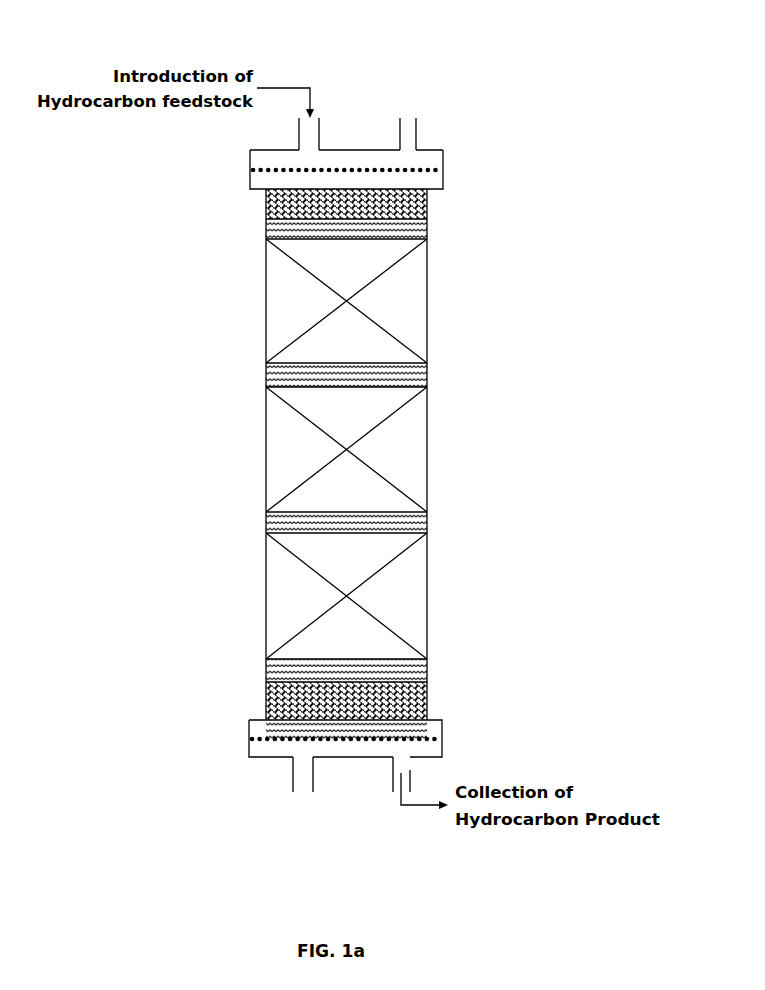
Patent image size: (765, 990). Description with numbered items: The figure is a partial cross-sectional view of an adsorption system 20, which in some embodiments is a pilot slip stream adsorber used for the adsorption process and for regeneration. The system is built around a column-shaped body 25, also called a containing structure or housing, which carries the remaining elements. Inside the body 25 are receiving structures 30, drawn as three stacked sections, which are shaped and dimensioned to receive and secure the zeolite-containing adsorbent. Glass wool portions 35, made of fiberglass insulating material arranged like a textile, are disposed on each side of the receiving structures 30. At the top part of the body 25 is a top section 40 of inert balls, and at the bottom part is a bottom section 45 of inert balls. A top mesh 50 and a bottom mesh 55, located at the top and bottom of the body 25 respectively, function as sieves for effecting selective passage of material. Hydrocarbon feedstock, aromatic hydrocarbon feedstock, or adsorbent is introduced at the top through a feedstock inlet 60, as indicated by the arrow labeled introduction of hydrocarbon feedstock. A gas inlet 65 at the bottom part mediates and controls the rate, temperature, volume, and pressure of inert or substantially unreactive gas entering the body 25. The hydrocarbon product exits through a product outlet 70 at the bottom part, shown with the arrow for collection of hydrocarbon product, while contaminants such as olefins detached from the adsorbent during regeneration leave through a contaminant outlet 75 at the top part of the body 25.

The adsorption system 20 is at (382, 101).
The body 25 is at (266, 355).
The receiving structures 30 is at (410, 307).
The glass wool portions 35 is at (428, 230).
The top section 40 is at (428, 201).
The bottom section 45 is at (266, 686).
The top mesh 50 is at (250, 172).
The bottom mesh 55 is at (266, 735).
The feedstock inlet 60 is at (299, 132).
The gas inlet 65 is at (292, 778).
The product outlet 70 is at (412, 774).
The contaminant outlet 75 is at (417, 125).